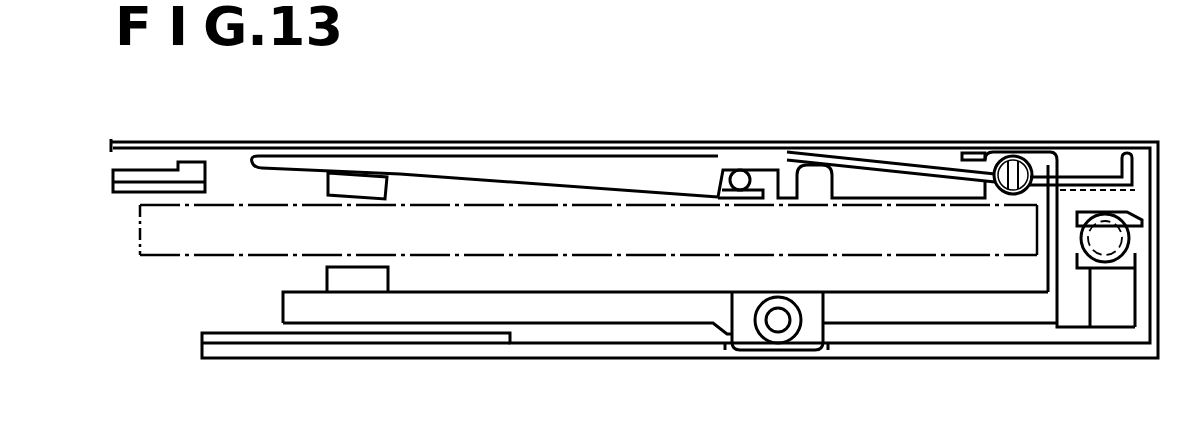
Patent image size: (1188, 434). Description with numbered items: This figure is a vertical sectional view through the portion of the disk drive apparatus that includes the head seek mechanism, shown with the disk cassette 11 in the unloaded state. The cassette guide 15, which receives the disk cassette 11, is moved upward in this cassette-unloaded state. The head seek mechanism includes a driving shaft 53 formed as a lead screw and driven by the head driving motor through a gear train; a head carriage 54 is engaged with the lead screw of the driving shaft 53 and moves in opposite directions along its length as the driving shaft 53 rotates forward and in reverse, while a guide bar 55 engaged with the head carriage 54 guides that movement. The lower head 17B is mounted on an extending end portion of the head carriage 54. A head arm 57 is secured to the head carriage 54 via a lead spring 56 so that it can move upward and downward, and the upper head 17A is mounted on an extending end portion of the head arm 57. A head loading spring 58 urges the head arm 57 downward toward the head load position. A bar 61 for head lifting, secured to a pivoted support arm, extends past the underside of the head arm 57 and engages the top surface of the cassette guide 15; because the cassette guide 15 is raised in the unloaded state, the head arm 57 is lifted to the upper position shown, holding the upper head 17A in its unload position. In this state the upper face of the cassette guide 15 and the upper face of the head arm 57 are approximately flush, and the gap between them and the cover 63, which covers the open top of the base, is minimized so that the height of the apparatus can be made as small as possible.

The disk cassette 11 is at (577, 238).
The cassette guide 15 is at (163, 171).
The upper head 17A is at (362, 181).
The lower head 17B is at (358, 287).
The driving shaft 53 is at (1107, 248).
The head carriage 54 is at (690, 310).
The guide bar 55 is at (778, 328).
The lead spring 56 is at (1042, 198).
The head arm 57 is at (602, 173).
The head loading spring 58 is at (915, 167).
The bar for head lifting 61 is at (741, 177).
The cover 63 is at (338, 141).